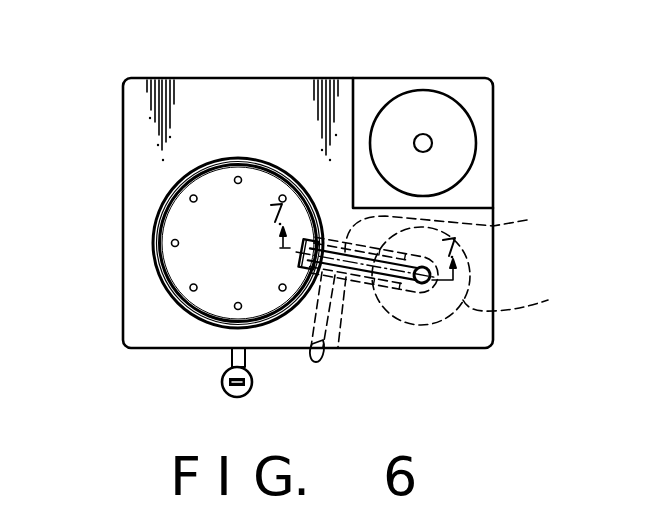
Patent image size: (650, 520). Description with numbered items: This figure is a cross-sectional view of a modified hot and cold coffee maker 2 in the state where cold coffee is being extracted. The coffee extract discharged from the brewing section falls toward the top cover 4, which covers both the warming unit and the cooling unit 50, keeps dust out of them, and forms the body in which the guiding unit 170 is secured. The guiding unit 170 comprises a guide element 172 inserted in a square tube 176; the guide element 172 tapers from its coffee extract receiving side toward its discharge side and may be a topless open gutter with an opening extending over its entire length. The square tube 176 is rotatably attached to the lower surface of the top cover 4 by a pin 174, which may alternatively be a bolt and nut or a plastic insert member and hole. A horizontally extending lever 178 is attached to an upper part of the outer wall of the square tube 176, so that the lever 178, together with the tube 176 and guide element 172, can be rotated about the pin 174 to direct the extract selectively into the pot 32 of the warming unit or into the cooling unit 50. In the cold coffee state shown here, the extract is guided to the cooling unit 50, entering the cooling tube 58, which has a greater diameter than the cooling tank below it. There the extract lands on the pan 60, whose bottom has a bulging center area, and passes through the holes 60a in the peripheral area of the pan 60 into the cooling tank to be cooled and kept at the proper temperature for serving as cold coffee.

The hot and cold coffee maker 2 is at (464, 80).
The top cover 4 is at (297, 90).
The pot 32 is at (526, 304).
The cooling unit 50 is at (168, 295).
The cooling tube 58 is at (232, 370).
The pan 60 is at (167, 217).
The holes 60a is at (180, 243).
The guiding unit 170 is at (354, 292).
The guide element 172 is at (403, 290).
The pin 174 is at (338, 347).
The square tube 176 is at (458, 171).
The lever 178 is at (310, 362).